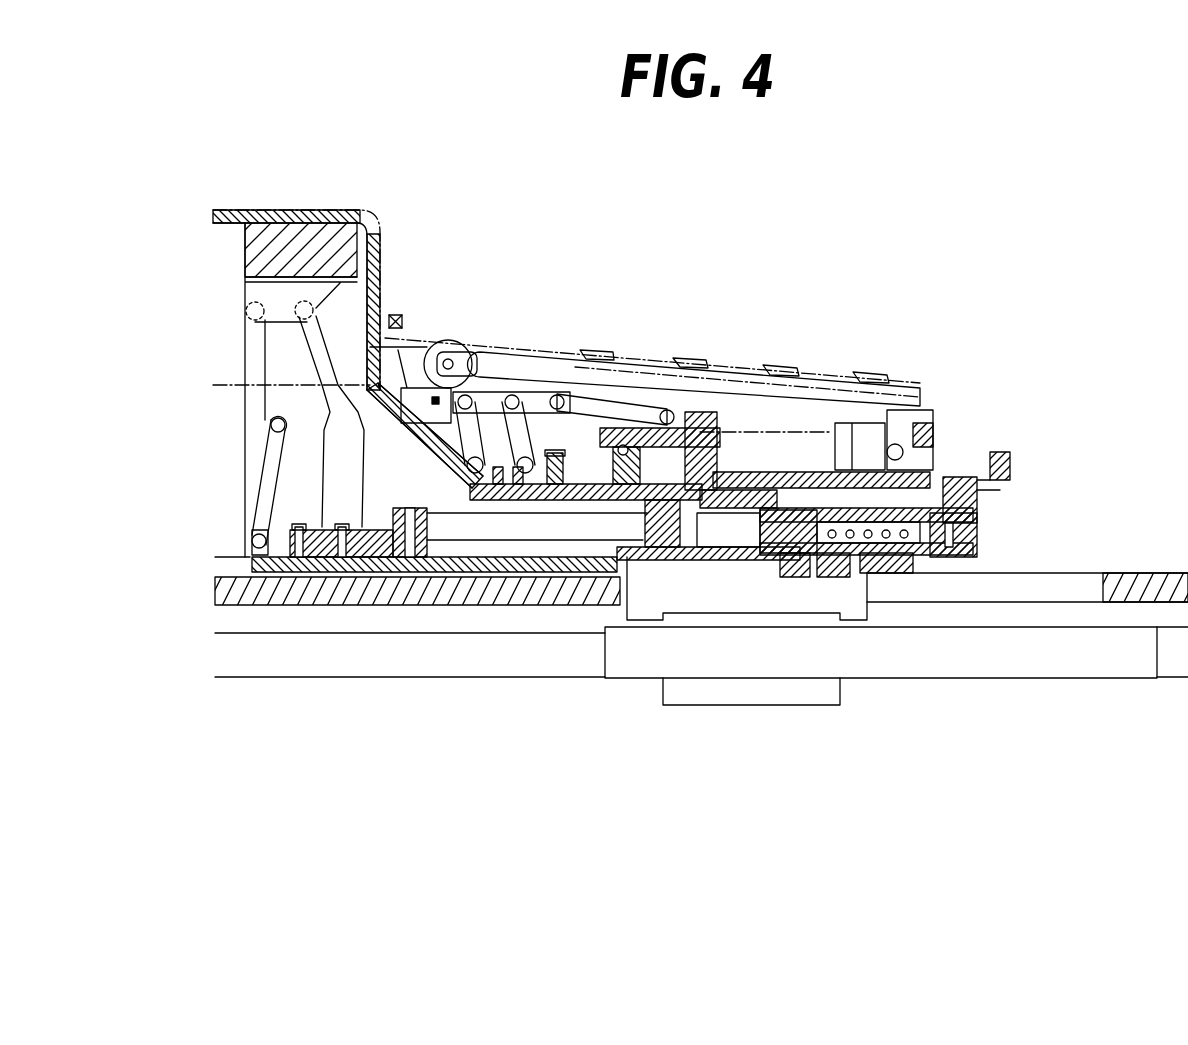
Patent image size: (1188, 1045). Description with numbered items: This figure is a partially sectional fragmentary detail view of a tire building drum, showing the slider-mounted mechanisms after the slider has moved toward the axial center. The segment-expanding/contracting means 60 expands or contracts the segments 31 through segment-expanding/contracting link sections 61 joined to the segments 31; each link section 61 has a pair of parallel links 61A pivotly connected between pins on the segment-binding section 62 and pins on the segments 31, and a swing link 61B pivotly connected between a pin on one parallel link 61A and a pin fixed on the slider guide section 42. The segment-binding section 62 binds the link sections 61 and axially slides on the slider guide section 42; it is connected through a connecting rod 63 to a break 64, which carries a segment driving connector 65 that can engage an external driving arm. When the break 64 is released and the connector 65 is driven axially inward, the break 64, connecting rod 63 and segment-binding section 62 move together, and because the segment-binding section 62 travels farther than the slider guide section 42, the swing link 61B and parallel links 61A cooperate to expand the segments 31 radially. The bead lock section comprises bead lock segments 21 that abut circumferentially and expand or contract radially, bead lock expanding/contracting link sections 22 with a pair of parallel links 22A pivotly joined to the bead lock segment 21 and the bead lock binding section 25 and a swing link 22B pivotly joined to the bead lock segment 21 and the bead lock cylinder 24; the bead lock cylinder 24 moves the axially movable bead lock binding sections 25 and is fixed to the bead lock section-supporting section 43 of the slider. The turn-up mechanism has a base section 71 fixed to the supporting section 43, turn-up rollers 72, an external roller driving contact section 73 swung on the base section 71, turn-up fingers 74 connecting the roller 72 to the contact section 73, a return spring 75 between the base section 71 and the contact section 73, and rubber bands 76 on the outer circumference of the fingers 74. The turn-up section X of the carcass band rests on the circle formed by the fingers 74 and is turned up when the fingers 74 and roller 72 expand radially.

The bead lock segments 21 is at (420, 340).
The bead lock expanding/contracting link sections 22 is at (567, 440).
The parallel links 22A is at (505, 392).
The swing link 22B is at (620, 405).
The bead lock cylinder 24 is at (650, 545).
The bead lock binding sections 25 is at (560, 500).
The segments 31 is at (297, 232).
The slider guide section 42 is at (473, 560).
The bead lock section-supporting section 43 is at (787, 560).
The segment-expanding/contracting means 60 is at (953, 452).
The segment-expanding/contracting link sections 61 is at (232, 418).
The parallel links 61A is at (328, 525).
The swing link 61B is at (257, 493).
The segment-binding section 62 is at (382, 557).
The connecting rod 63 is at (713, 548).
The break 64 is at (972, 473).
The segment driving connector 65 is at (1010, 470).
The base section 71 is at (822, 440).
The turn-up roller 72 is at (450, 340).
The external roller driving contact section 73 is at (940, 400).
The turn-up fingers 74 is at (745, 395).
The return spring 75 is at (780, 425).
The rubber bands 76 is at (601, 344).
The turn-up section X is at (527, 342).